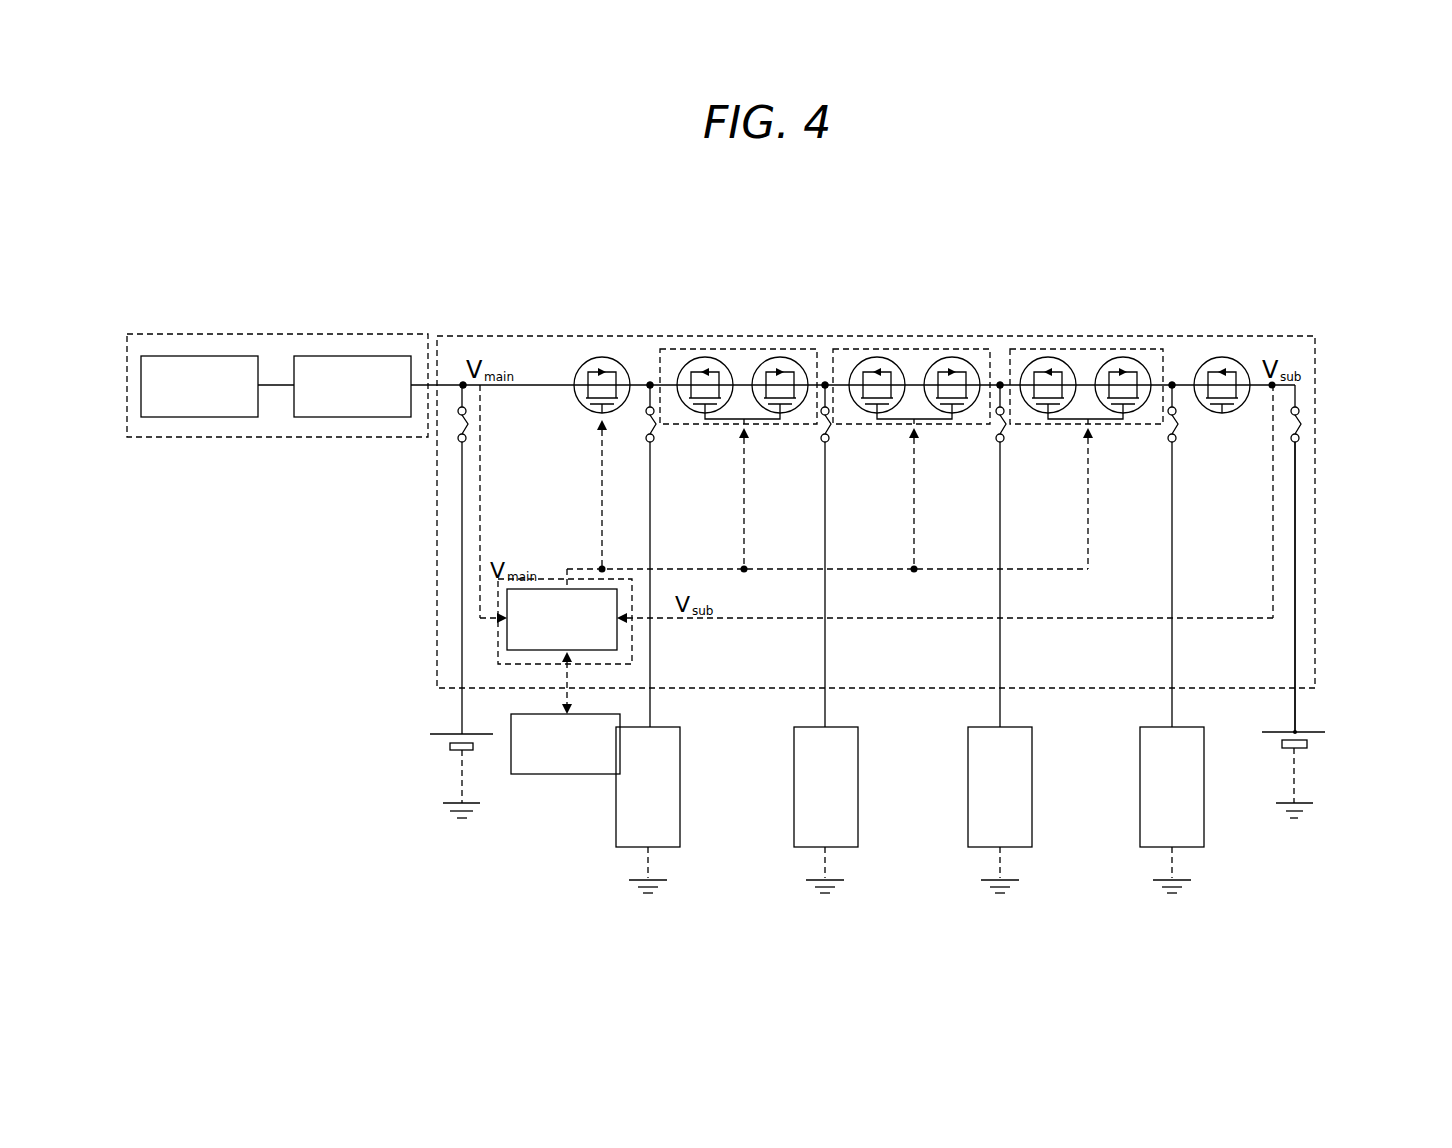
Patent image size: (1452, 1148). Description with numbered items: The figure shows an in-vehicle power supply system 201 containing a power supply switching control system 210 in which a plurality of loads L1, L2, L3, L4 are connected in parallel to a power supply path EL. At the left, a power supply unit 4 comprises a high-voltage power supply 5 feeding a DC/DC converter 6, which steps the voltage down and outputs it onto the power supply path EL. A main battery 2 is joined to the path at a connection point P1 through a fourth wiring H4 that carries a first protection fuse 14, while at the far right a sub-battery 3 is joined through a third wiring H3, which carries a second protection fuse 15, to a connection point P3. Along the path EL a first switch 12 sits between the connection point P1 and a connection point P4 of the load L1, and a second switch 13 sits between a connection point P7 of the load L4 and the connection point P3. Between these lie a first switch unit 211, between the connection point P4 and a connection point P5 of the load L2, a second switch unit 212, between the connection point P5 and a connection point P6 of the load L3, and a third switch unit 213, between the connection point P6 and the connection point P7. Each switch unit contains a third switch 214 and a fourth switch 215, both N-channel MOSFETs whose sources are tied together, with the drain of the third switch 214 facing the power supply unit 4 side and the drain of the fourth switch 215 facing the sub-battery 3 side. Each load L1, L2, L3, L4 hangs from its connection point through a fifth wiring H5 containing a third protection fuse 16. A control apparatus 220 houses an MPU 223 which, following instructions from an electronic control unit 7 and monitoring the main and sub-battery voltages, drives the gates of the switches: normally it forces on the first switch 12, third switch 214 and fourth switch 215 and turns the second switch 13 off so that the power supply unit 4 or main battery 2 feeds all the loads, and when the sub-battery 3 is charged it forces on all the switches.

The main battery 2 is at (440, 757).
The sub-battery 3 is at (1313, 738).
The power supply unit 4 is at (245, 328).
The power supply 5 is at (195, 356).
The DC/DC converter 6 is at (350, 356).
The electronic control unit 7 is at (567, 775).
The first switch 12 is at (598, 358).
The second switch 13 is at (1230, 358).
The first protection fuse 14 is at (457, 434).
The second protection fuse 15 is at (1300, 428).
The third protection fuse 16 is at (655, 428).
The in-vehicle power supply system 201 is at (1288, 282).
The power supply switching control system 210 is at (959, 321).
The first switch unit 211 is at (752, 338).
The second switch unit 212 is at (926, 338).
The third switch unit 213 is at (1067, 332).
The third switch 214 is at (703, 358).
The fourth switch 215 is at (782, 358).
The control apparatus 220 is at (494, 638).
The MPU 223 is at (507, 640).
The connection point P1 is at (463, 383).
The connection point P3 is at (1295, 725).
The connection point P4 is at (650, 385).
The connection point P5 is at (825, 385).
The connection point P6 is at (1000, 385).
The connection point P7 is at (1172, 385).
The third wiring H3 is at (1295, 628).
The fourth wiring H4 is at (462, 662).
The fifth wiring H5 is at (650, 700).
The load L1 is at (689, 825).
The load L2 is at (866, 825).
The load L3 is at (1041, 825).
The load L4 is at (1213, 825).
The power supply path EL is at (1297, 386).